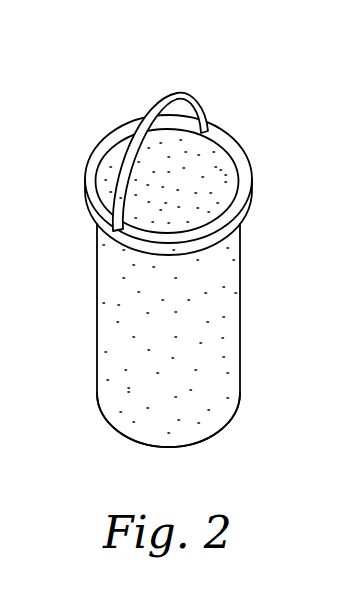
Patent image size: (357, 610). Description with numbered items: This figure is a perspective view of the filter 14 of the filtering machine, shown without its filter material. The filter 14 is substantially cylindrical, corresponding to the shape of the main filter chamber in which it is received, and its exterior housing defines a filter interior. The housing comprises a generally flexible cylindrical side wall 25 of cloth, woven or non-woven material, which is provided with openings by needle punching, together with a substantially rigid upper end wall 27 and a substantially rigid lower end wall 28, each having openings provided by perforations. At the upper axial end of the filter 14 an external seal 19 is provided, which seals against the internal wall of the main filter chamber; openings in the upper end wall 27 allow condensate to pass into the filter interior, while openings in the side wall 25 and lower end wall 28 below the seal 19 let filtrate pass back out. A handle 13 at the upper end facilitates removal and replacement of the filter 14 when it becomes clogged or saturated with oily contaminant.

The handle 13 is at (165, 94).
The filter 14 is at (242, 263).
The external seal 19 is at (245, 165).
The side wall 25 is at (130, 286).
The upper end wall 27 is at (206, 142).
The lower end wall 28 is at (193, 444).